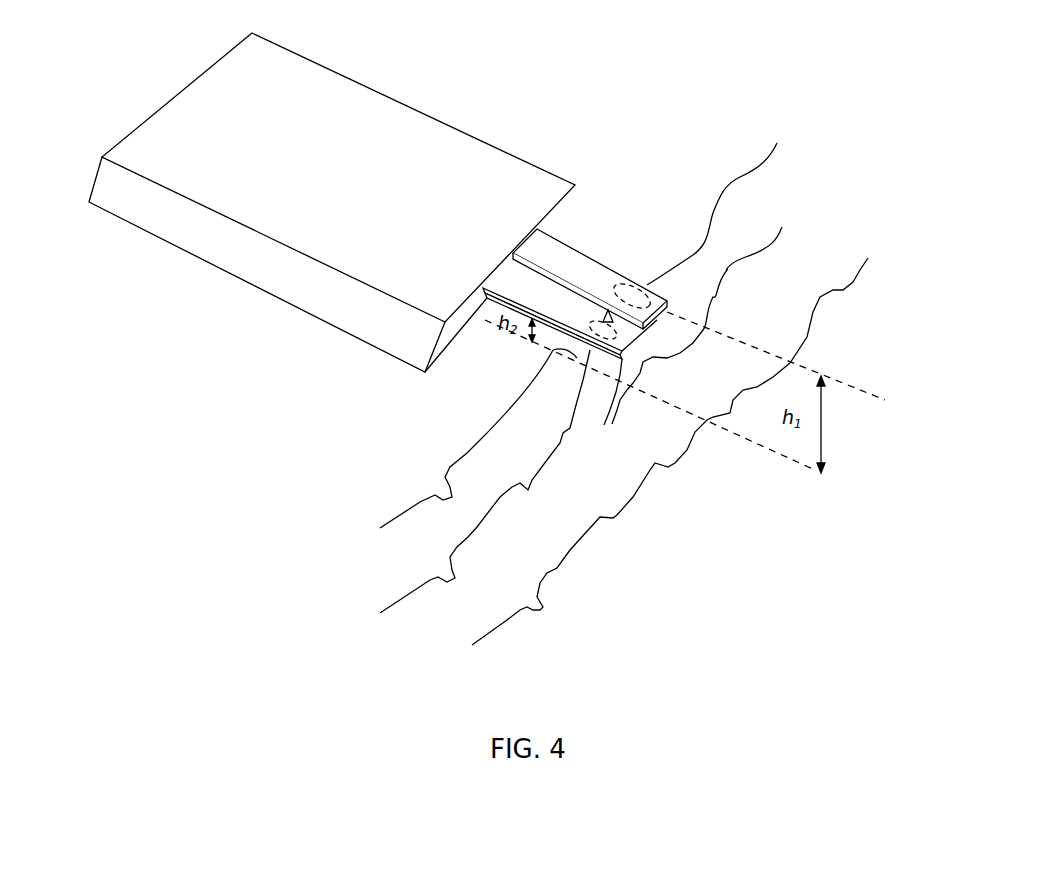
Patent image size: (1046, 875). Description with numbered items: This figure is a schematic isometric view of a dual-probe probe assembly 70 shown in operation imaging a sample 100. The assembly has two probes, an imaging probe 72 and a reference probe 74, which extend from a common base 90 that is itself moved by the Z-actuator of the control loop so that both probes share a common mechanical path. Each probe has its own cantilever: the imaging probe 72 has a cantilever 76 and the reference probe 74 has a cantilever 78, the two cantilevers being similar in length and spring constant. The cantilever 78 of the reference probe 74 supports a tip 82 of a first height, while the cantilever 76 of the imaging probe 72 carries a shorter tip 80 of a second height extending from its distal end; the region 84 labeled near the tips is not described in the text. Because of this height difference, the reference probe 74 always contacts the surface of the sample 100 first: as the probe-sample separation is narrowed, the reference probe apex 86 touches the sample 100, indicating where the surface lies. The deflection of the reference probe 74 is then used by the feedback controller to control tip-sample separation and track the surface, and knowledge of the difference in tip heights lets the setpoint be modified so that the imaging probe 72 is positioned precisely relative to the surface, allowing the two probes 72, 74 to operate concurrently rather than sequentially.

The probe assembly 70 is at (585, 60).
The imaging probe 72 is at (477, 300).
The reference probe 74 is at (611, 262).
The cantilever 76 is at (508, 283).
The cantilever 78 is at (567, 262).
The tip 80 is at (592, 355).
The tip 82 is at (650, 356).
The fabric fold 84 is at (599, 382).
The reference probe apex 86 is at (620, 388).
The common base 90 is at (427, 112).
The sample 100 is at (843, 290).